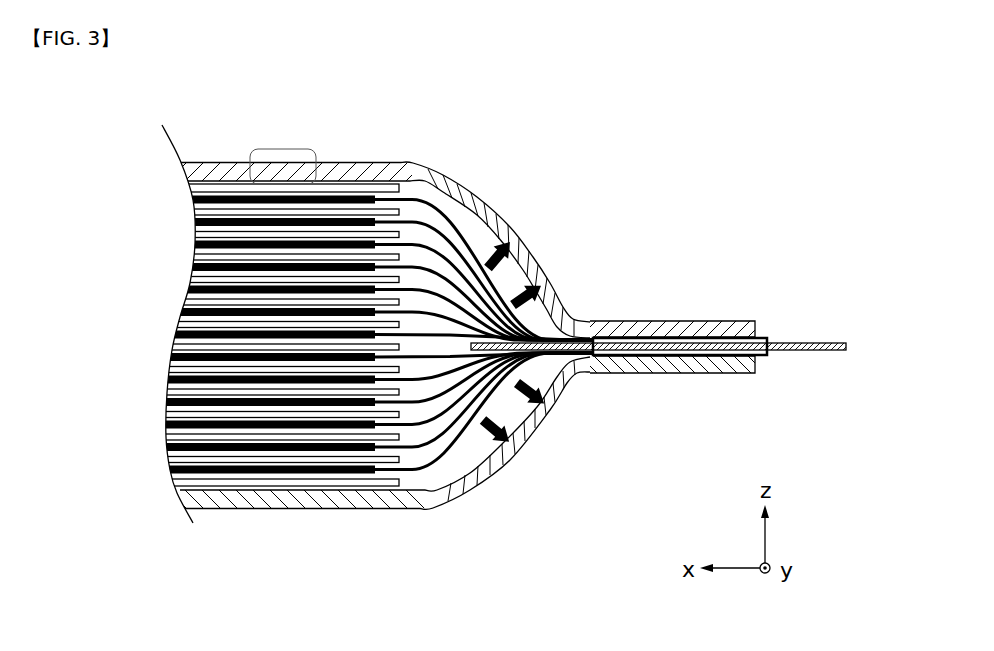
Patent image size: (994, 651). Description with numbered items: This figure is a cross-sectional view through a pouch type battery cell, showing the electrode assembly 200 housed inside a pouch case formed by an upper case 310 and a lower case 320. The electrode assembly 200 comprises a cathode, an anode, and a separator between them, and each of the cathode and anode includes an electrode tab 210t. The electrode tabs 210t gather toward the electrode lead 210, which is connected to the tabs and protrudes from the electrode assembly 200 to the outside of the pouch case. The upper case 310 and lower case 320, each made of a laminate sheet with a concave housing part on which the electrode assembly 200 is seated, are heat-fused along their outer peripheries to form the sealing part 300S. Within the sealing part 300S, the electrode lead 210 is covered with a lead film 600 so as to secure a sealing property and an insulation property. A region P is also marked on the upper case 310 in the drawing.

The electrode assembly 200 is at (352, 192).
The upper case 310 is at (212, 172).
The lower case 320 is at (300, 497).
The electrode tab 210t is at (426, 202).
The electrode lead 210 is at (812, 350).
The lead film 600 is at (762, 339).
The sealing part 300S is at (750, 300).
The pressing portion P is at (283, 148).